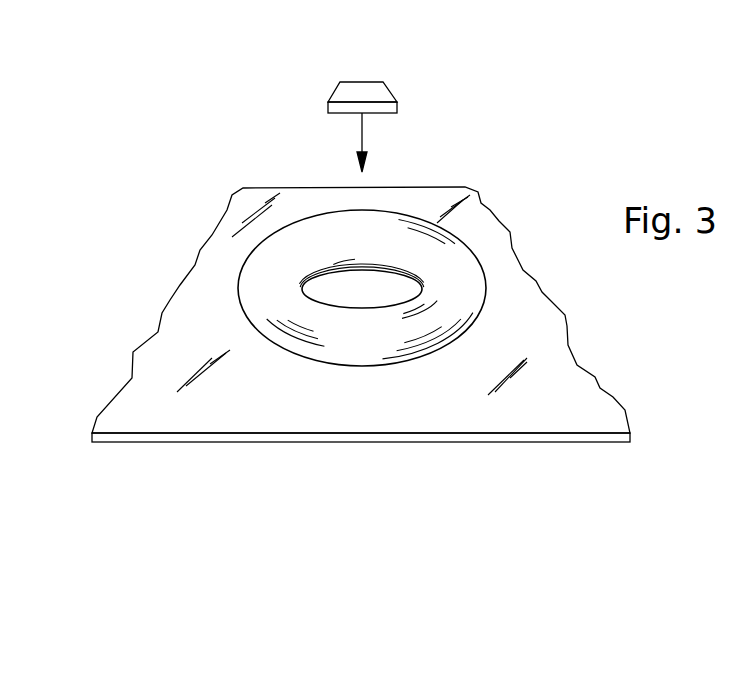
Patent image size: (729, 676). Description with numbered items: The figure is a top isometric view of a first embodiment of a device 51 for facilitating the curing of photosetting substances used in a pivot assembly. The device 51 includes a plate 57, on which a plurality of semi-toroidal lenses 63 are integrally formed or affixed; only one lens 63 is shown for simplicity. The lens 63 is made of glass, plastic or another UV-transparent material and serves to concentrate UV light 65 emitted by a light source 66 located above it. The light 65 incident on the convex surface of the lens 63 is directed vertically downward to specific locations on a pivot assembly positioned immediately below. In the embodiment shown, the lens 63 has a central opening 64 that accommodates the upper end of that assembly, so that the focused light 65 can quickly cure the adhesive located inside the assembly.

The device 51 is at (140, 205).
The plate 57 is at (560, 383).
The semi-toroidal lens 63 is at (463, 290).
The central opening 64 is at (362, 287).
The UV light 65 is at (363, 133).
The light source 66 is at (372, 93).